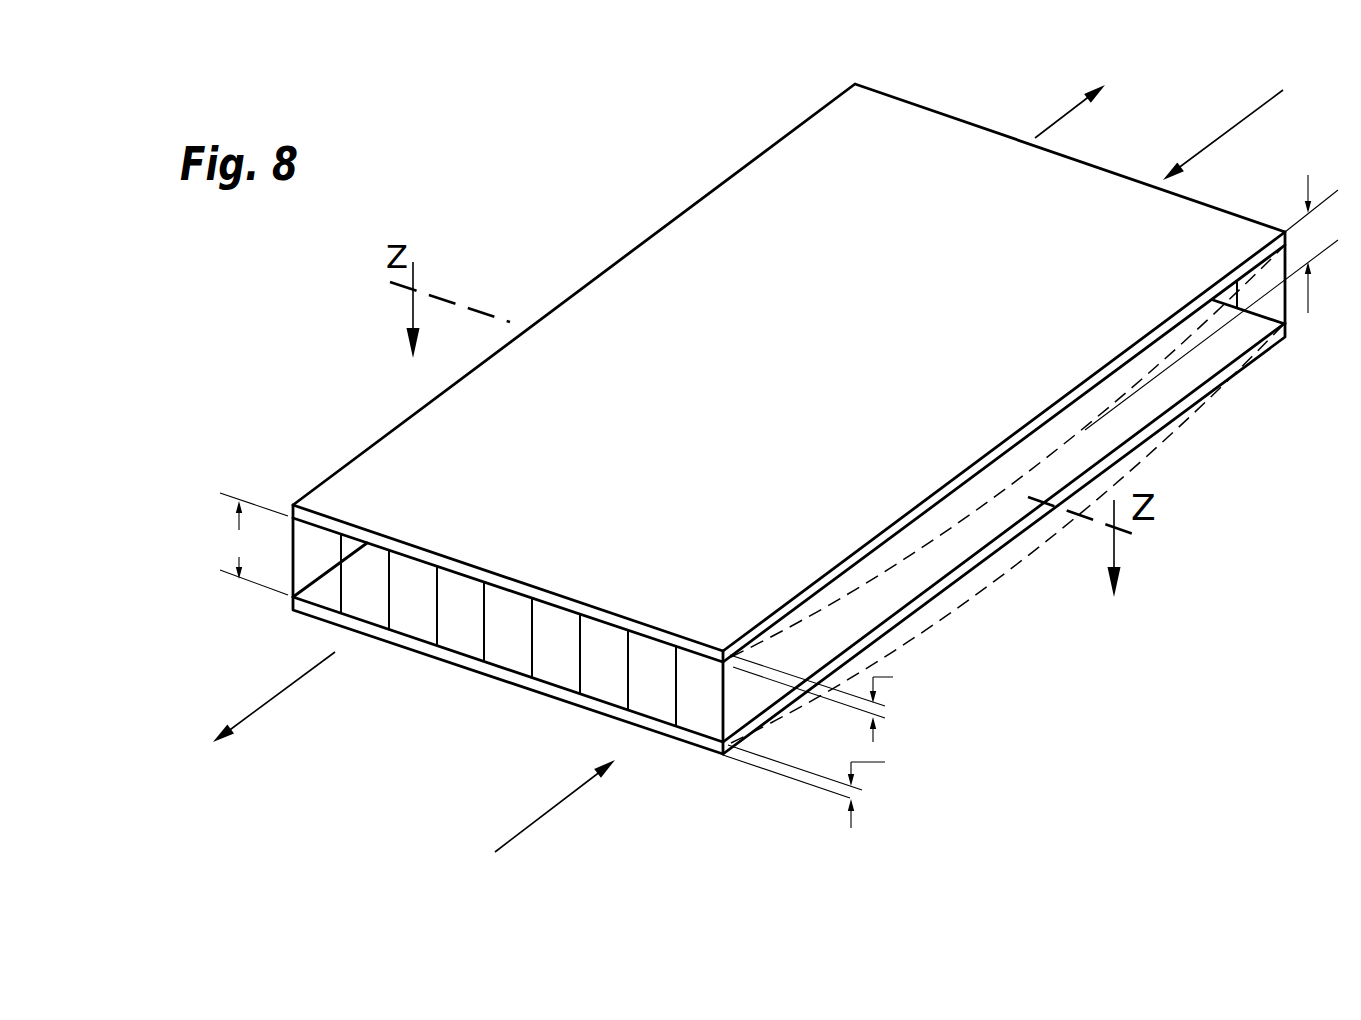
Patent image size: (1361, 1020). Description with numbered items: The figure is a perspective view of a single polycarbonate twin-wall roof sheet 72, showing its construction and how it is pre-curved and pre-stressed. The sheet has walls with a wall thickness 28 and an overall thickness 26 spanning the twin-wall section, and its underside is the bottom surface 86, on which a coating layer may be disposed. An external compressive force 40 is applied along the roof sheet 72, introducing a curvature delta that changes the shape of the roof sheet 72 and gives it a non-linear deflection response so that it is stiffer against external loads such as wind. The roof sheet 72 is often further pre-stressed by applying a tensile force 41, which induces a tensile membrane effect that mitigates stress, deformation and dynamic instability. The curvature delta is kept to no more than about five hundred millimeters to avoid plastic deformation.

The overall thickness 26 is at (225, 541).
The wall thickness 28 is at (862, 790).
The compressive force 40 is at (1268, 102).
The tensile force 41 is at (1075, 110).
The roof sheet 72 is at (1095, 794).
The bottom surface 86 is at (995, 545).